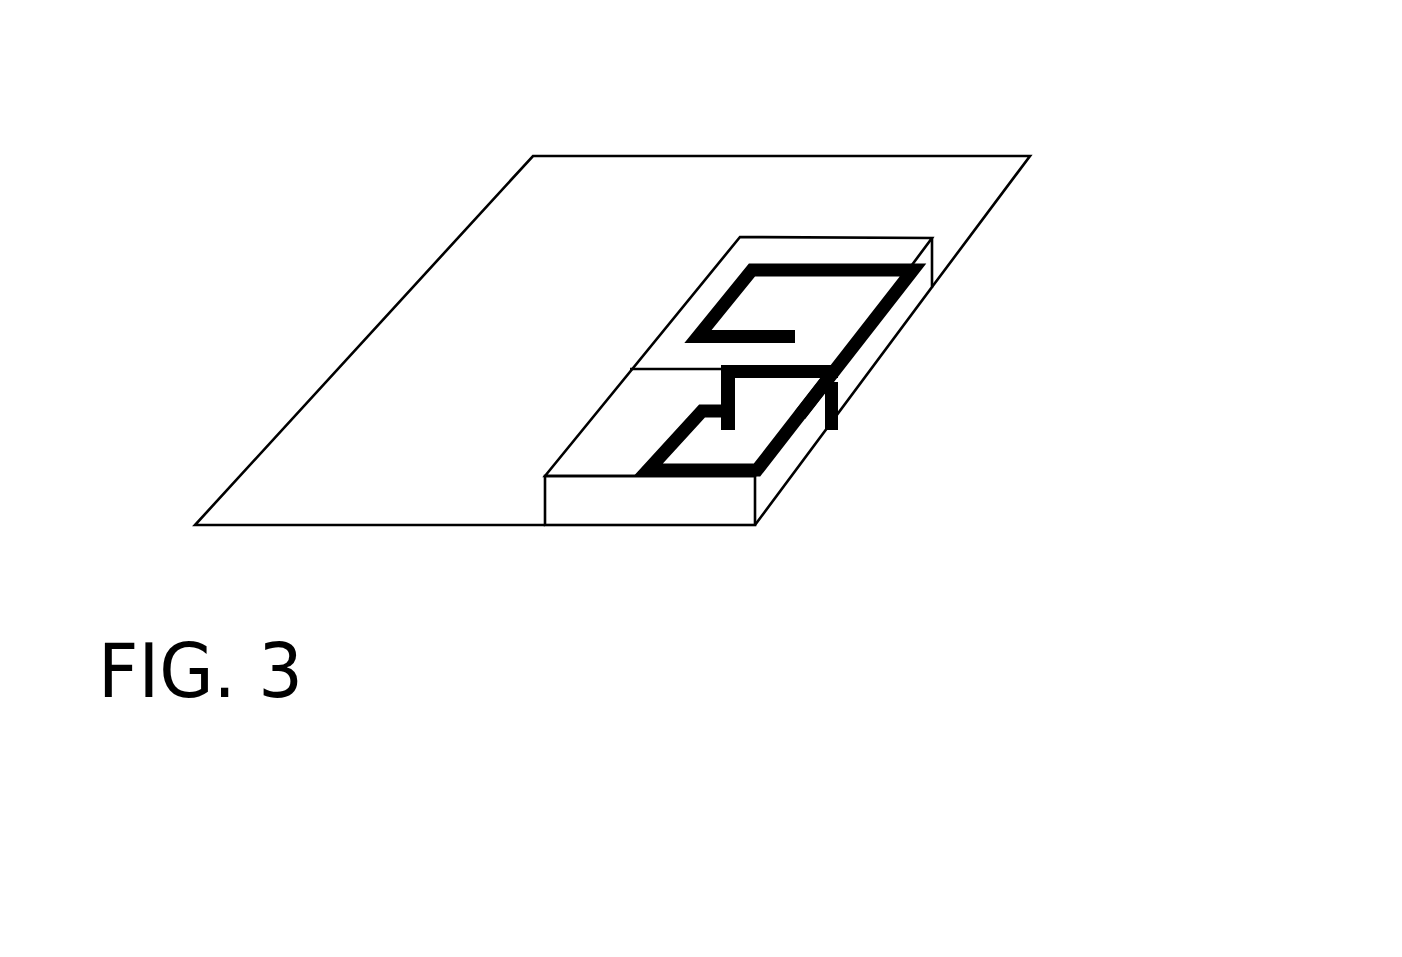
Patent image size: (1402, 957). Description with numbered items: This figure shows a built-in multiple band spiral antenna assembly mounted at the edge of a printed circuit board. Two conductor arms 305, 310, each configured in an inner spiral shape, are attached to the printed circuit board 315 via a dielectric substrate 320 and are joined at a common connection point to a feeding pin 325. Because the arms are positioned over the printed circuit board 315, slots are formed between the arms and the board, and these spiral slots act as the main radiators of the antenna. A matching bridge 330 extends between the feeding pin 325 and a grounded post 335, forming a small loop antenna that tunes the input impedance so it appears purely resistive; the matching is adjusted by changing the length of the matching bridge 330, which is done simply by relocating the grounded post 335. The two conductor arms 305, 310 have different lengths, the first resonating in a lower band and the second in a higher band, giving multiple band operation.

The conductor arm 305 is at (893, 310).
The conductor arm 310 is at (783, 457).
The printed circuit board 315 is at (480, 327).
The dielectric substrate 320 is at (890, 348).
The feeding pin 325 is at (838, 428).
The matching bridge 330 is at (743, 367).
The grounded post 335 is at (721, 432).